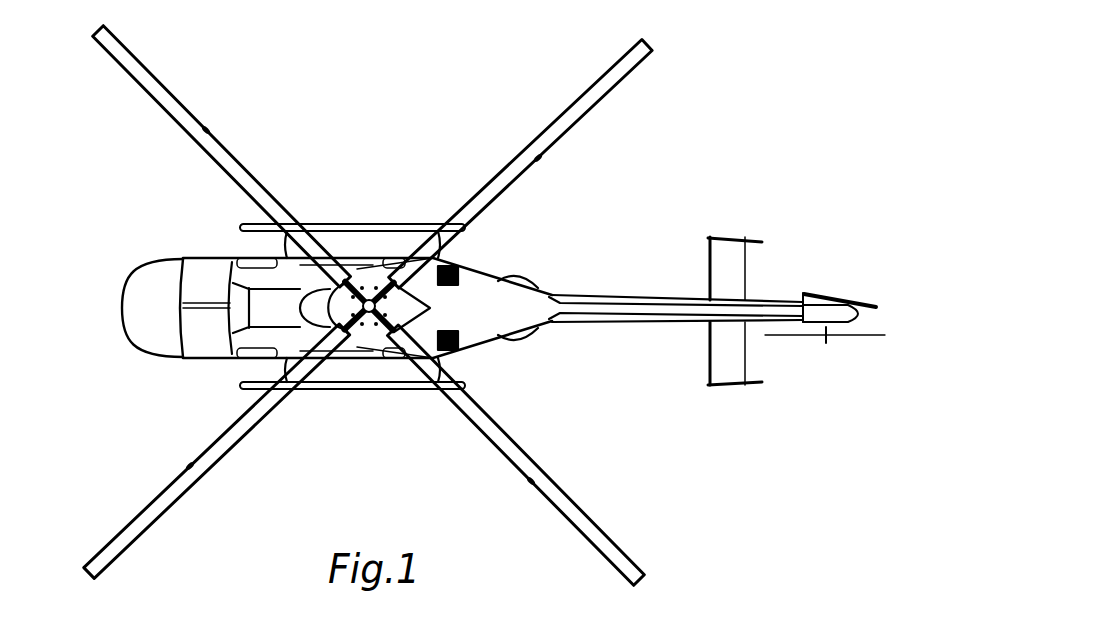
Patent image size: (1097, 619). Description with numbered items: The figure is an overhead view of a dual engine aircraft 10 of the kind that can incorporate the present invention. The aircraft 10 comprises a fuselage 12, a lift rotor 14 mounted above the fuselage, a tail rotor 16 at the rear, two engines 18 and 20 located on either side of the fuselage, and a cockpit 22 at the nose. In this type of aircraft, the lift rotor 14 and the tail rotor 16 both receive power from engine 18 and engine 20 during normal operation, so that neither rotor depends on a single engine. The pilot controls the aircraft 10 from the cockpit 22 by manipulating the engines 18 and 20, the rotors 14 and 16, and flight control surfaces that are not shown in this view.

The dual engine aircraft 10 is at (494, 292).
The fuselage 12 is at (373, 242).
The lift rotor 14 is at (653, 44).
The tail rotor 16 is at (852, 337).
The engine 18 is at (493, 263).
The engine 20 is at (497, 347).
The cockpit 22 is at (207, 257).